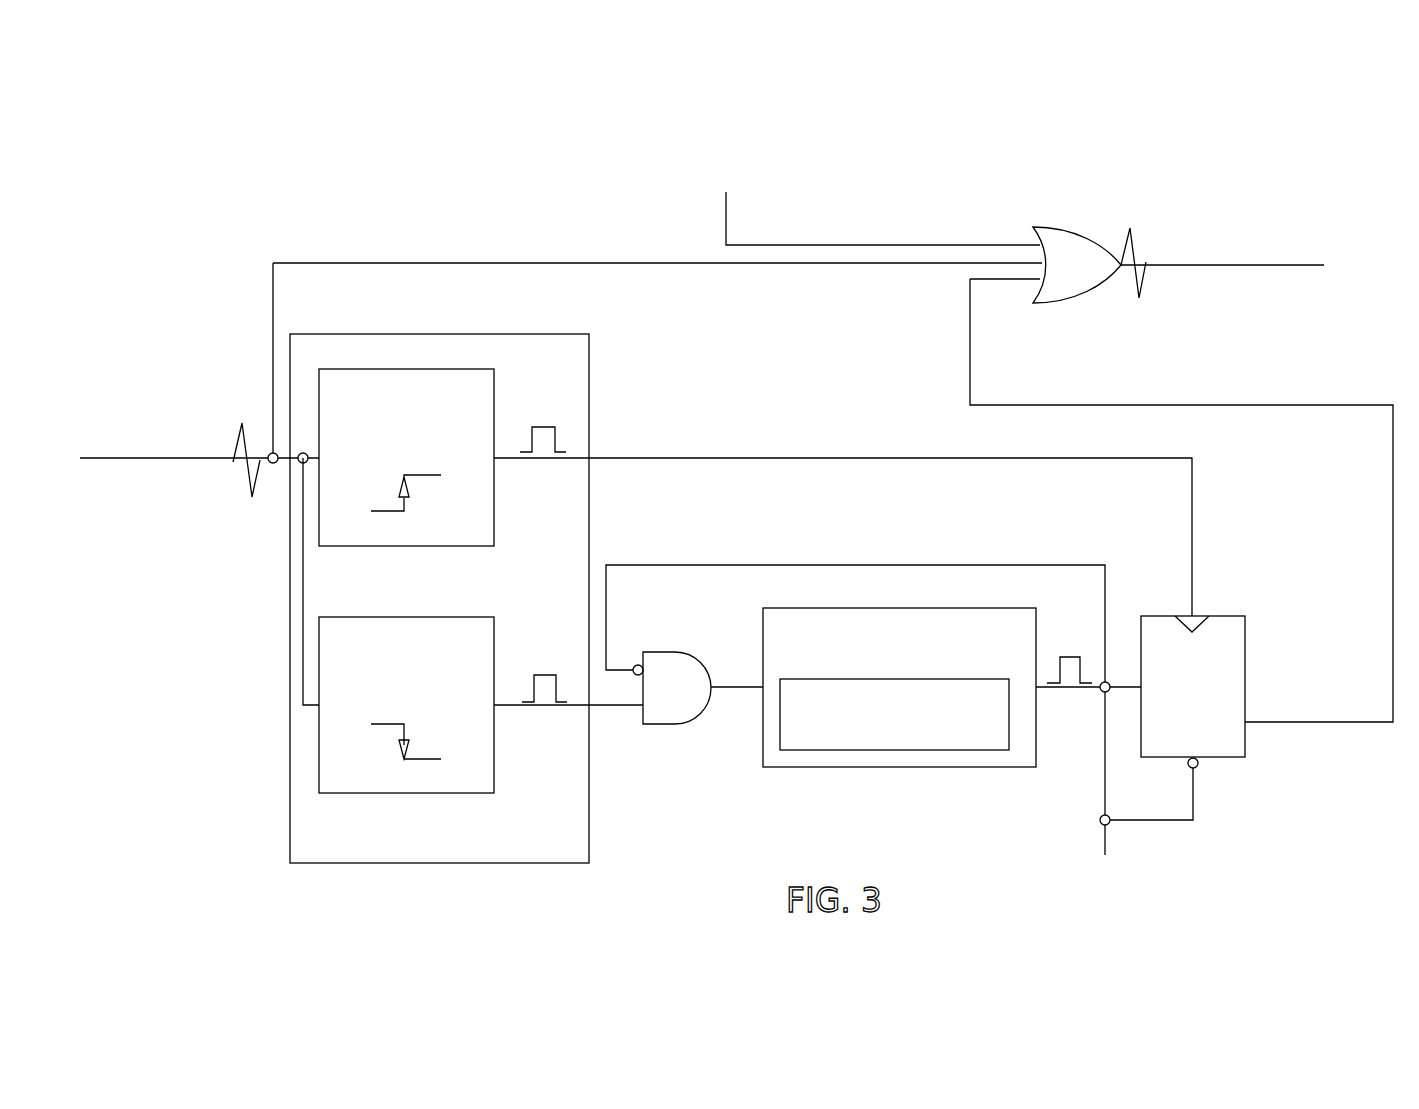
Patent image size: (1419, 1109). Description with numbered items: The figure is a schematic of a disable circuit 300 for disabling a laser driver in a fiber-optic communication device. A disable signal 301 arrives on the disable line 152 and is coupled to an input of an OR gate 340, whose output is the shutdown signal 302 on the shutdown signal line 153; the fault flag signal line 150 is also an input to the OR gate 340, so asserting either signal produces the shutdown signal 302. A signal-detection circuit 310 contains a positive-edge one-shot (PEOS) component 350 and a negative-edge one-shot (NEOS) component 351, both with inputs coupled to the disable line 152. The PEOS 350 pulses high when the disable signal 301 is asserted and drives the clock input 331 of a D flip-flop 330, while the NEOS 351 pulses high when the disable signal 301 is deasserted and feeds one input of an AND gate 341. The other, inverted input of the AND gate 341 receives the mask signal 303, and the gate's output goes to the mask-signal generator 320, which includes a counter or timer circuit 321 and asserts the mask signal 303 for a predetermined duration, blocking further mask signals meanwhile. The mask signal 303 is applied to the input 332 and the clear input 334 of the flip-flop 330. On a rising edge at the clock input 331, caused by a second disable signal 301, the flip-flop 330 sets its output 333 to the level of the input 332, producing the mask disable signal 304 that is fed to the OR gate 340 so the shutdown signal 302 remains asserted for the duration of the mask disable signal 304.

The disable circuit 300 is at (272, 165).
The fault flag signal line 150 is at (726, 215).
The OR gate 340 is at (1094, 232).
The shutdown signal 302 is at (1130, 228).
The shutdown signal line 153 is at (1233, 227).
The signal-detection circuit 310 is at (566, 370).
The disable signal 301 is at (242, 423).
The disable line 152 is at (100, 458).
The positive-edge one-shot (PEOS) component 350 is at (424, 459).
The negative-edge one-shot (NEOS) component 351 is at (424, 707).
The AND gate 341 is at (665, 652).
The mask-signal generator 320 is at (1019, 656).
The counter or timer circuit 321 is at (912, 740).
The clock input 331 is at (1200, 613).
The mask disable signal 304 is at (1393, 622).
The D flip-flop 330 is at (1245, 677).
The input 332 is at (1157, 668).
The output 333 is at (1212, 683).
The clear input 334 is at (1208, 740).
The mask signal 303 is at (1105, 767).